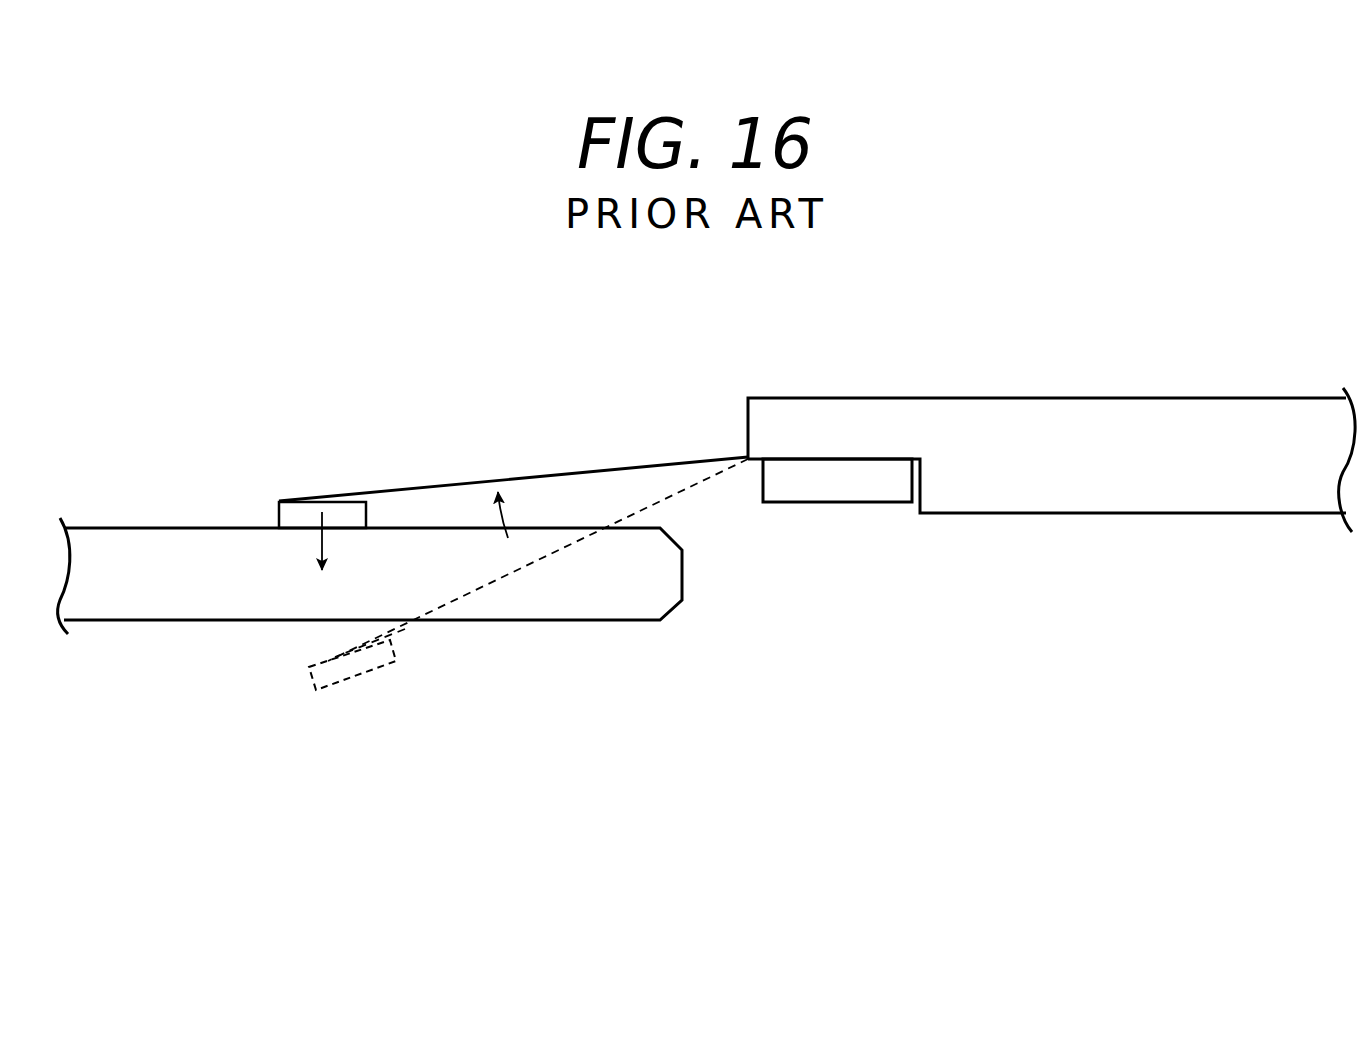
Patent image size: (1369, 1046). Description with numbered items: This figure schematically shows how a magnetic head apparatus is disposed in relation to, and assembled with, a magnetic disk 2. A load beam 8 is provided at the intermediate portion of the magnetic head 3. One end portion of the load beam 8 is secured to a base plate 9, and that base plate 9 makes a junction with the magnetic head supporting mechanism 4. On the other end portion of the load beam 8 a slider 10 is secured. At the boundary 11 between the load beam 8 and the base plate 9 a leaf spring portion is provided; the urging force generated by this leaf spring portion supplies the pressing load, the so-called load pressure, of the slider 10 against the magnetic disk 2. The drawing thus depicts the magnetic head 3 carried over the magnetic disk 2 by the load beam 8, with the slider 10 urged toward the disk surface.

The magnetic disk 2 is at (193, 540).
The magnetic head 3 is at (557, 452).
The magnetic head supporting mechanism 4 is at (1083, 383).
The load beam 8 is at (436, 485).
The base plate 9 is at (864, 490).
The slider 10 is at (300, 517).
The boundary 11 is at (750, 482).